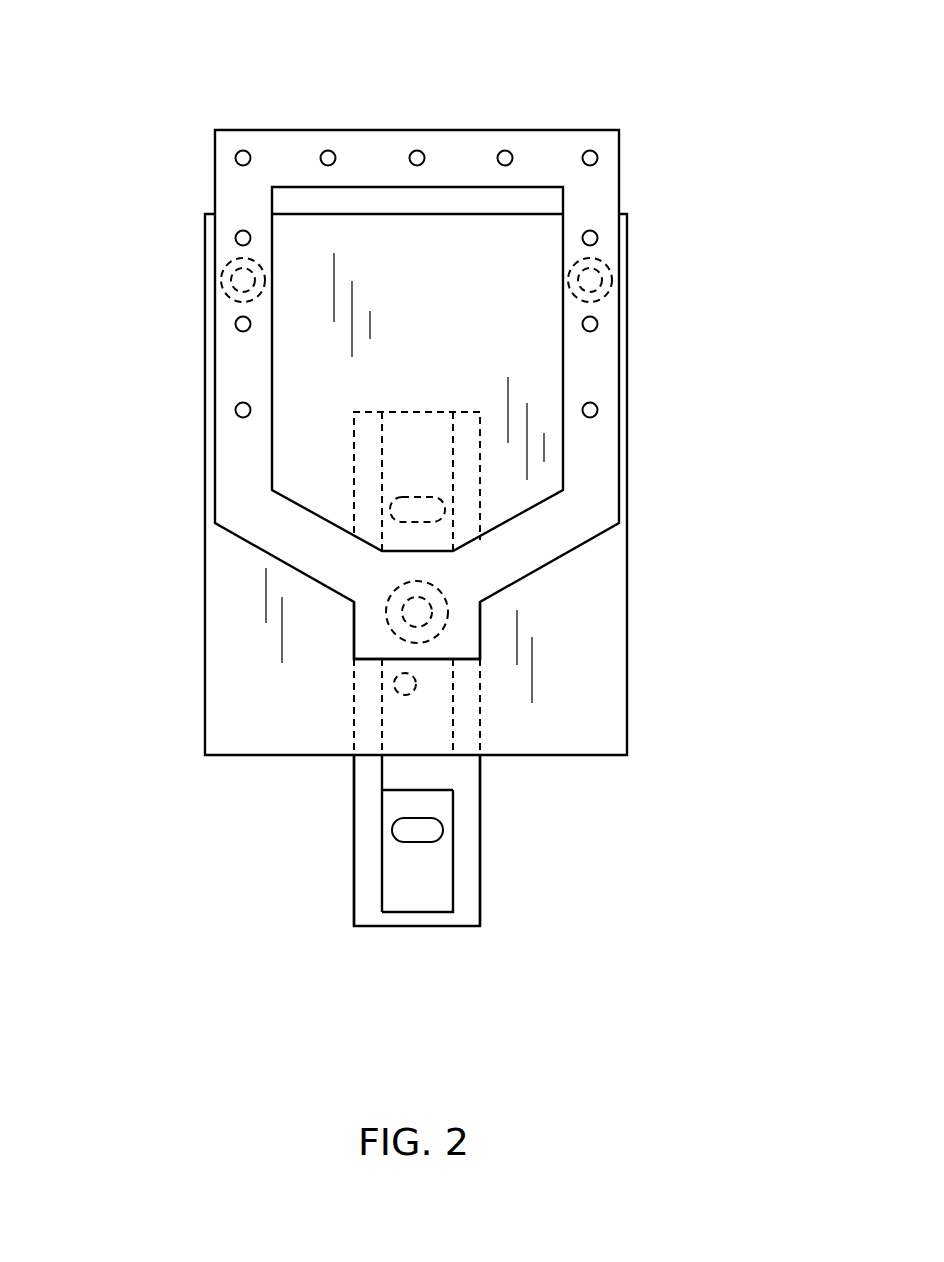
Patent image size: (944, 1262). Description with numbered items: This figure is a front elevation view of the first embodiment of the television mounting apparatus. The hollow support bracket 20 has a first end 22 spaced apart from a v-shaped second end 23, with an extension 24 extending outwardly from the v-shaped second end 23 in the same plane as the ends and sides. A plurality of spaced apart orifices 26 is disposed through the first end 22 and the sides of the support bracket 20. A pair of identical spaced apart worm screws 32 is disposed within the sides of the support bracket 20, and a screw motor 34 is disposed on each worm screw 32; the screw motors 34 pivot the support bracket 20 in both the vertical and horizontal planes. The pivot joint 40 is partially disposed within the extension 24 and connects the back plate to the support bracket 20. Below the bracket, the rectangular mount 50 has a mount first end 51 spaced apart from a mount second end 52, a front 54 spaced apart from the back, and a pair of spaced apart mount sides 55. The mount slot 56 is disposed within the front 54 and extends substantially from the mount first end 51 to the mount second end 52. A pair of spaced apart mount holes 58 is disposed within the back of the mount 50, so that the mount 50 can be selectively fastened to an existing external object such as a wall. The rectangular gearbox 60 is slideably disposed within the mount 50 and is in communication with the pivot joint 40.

The hollow support bracket 20 is at (662, 178).
The first end 22 is at (535, 126).
The v-shaped second end 23 is at (300, 583).
The extension 24 is at (480, 632).
The spaced apart orifices 26 is at (327, 150).
The worm screws 32 is at (241, 280).
The screw motor 34 is at (232, 261).
The pivot joint 40 is at (460, 597).
The rectangular mount 50 is at (493, 799).
The mount first end 51 is at (460, 928).
The mount second end 52 is at (370, 408).
The front 54 is at (473, 891).
The mount sides 55 is at (354, 818).
The mount slot 56 is at (374, 887).
The mount holes 58 is at (446, 508).
The rectangular gearbox 60 is at (403, 772).